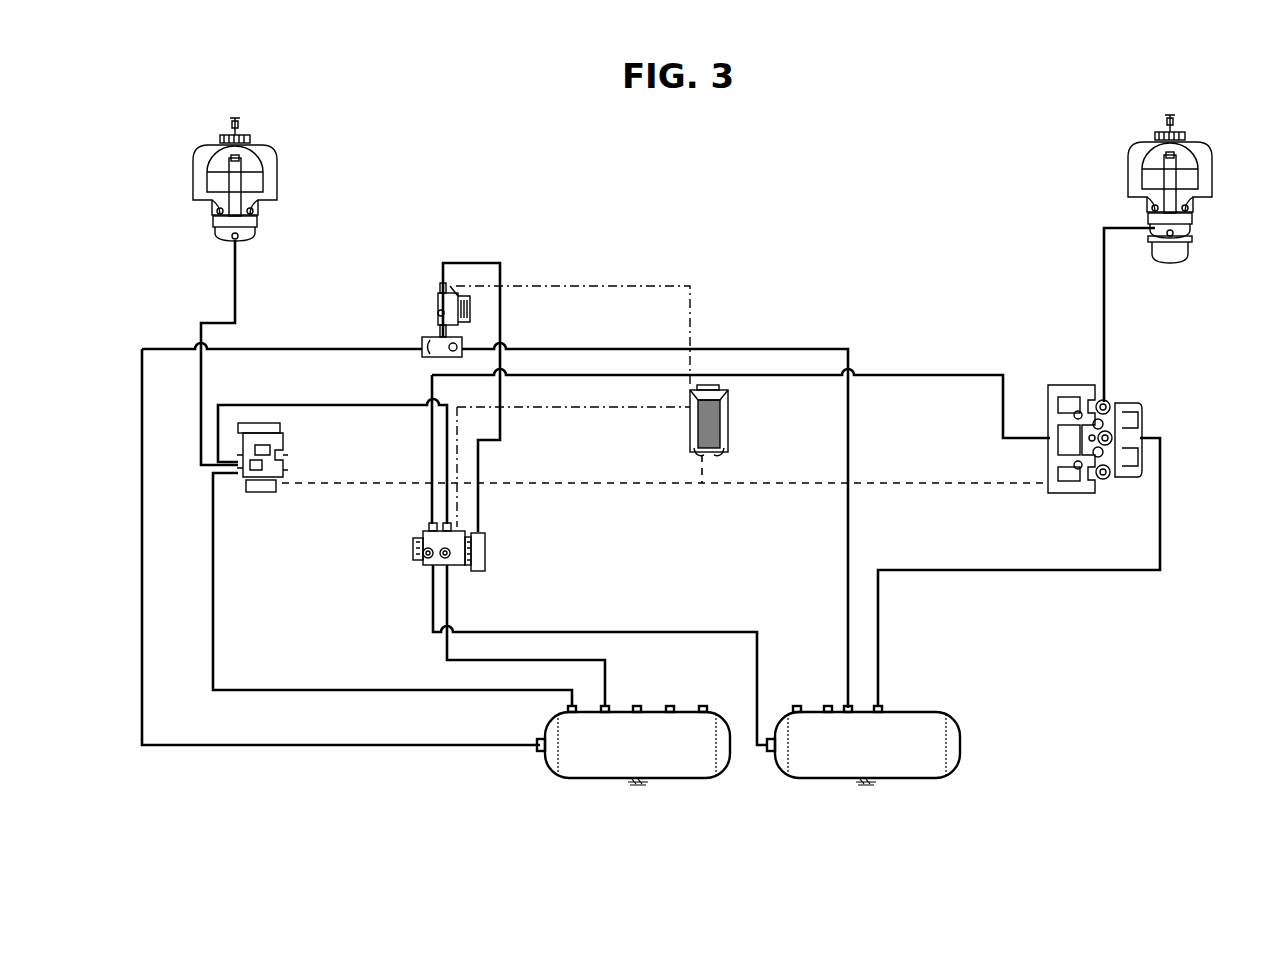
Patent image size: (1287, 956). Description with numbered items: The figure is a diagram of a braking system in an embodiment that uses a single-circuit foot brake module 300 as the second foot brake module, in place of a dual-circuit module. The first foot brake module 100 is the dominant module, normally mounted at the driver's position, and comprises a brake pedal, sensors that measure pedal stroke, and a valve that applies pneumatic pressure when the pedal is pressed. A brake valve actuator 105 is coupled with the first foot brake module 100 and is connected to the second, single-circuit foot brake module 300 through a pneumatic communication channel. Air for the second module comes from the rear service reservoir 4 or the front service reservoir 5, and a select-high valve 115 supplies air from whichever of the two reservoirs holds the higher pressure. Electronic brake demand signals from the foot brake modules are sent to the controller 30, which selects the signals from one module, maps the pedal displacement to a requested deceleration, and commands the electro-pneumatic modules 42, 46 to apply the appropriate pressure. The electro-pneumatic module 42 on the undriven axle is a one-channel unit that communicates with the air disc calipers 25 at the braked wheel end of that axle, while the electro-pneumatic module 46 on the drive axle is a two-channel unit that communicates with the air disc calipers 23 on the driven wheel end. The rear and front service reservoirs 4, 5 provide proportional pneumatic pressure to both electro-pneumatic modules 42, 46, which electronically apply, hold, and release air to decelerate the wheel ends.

The air disc calipers 25 is at (195, 178).
The air disc calipers 23 is at (1222, 176).
The single-circuit foot brake module 300 is at (470, 300).
The select-high valve 115 is at (420, 362).
The electro-pneumatic module 42 is at (285, 457).
The controller 30 is at (730, 427).
The first foot brake module 100 is at (410, 551).
The brake valve actuator 105 is at (487, 547).
The electro-pneumatic module 46 is at (1135, 403).
The front service reservoir 5 is at (695, 783).
The rear service reservoir 4 is at (925, 783).